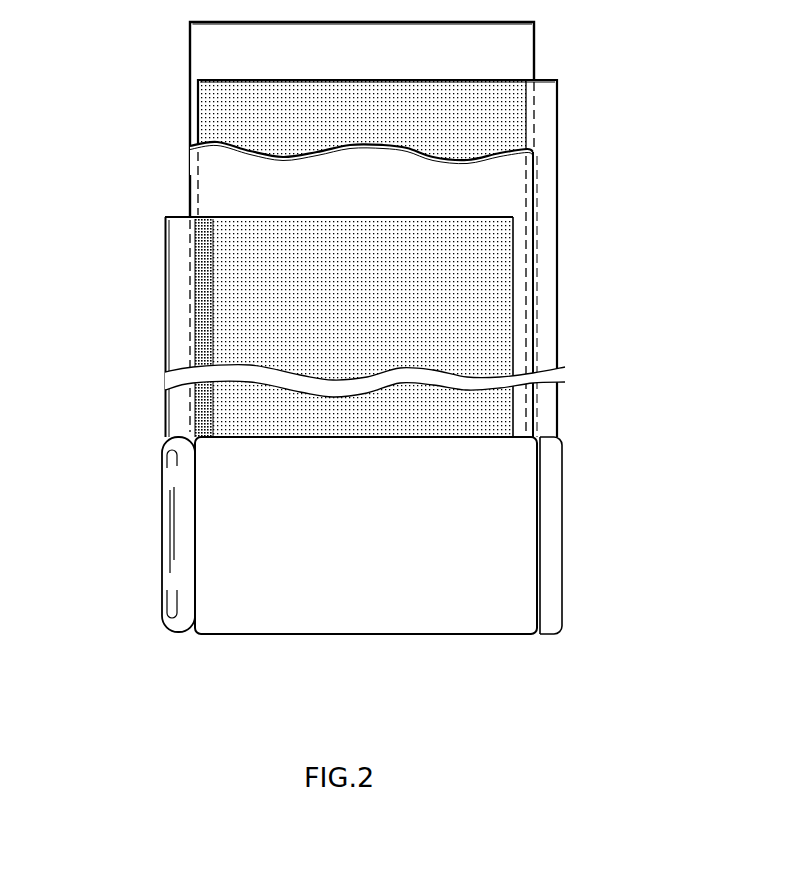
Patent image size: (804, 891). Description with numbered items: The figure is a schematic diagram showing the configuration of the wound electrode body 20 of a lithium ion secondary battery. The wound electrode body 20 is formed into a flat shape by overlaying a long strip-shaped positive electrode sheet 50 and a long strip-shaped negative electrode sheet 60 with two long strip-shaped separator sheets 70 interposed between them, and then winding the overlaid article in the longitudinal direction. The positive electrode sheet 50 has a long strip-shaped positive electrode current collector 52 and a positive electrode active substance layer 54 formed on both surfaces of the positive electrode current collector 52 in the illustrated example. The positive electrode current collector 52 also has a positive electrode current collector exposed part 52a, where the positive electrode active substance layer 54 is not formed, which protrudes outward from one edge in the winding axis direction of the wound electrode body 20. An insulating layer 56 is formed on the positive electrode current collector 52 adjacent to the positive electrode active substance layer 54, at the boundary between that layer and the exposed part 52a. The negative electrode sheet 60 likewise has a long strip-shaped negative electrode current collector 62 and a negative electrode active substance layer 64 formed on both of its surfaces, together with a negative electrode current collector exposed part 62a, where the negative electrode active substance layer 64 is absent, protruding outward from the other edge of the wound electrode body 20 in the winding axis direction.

The wound electrode body 20 is at (425, 612).
The positive electrode sheet 50 is at (274, 424).
The positive electrode current collector 52 is at (165, 360).
The positive electrode current collector exposed part 52a is at (177, 323).
The positive electrode active substance layer 54 is at (243, 241).
The insulating layer 56 is at (197, 405).
The negative electrode sheet 60 is at (437, 354).
The negative electrode current collector 62 is at (559, 265).
The negative electrode current collector exposed part 62a is at (547, 212).
The negative electrode active substance layer 64 is at (520, 108).
The separator sheet 70 is at (208, 60).